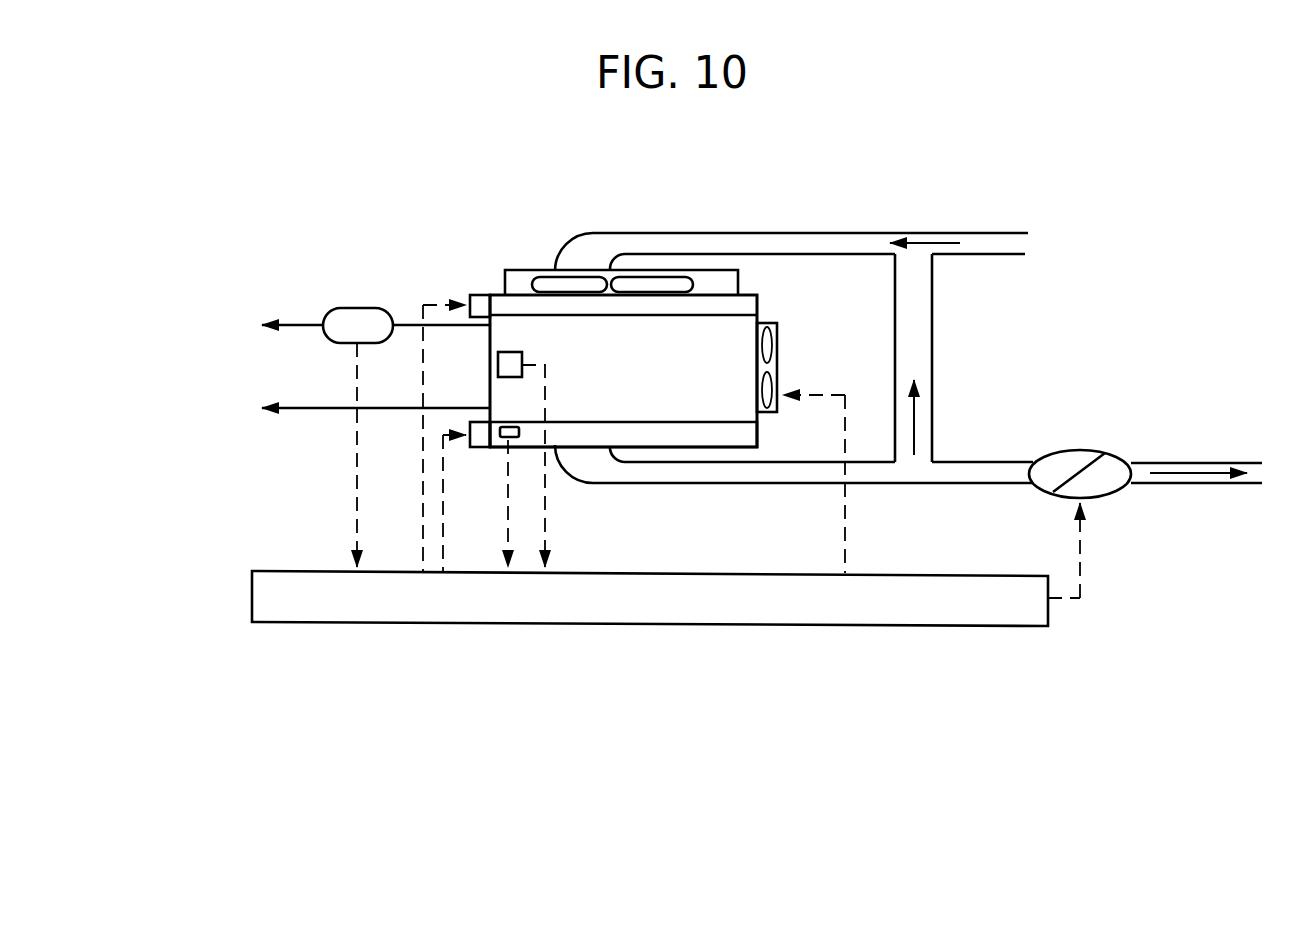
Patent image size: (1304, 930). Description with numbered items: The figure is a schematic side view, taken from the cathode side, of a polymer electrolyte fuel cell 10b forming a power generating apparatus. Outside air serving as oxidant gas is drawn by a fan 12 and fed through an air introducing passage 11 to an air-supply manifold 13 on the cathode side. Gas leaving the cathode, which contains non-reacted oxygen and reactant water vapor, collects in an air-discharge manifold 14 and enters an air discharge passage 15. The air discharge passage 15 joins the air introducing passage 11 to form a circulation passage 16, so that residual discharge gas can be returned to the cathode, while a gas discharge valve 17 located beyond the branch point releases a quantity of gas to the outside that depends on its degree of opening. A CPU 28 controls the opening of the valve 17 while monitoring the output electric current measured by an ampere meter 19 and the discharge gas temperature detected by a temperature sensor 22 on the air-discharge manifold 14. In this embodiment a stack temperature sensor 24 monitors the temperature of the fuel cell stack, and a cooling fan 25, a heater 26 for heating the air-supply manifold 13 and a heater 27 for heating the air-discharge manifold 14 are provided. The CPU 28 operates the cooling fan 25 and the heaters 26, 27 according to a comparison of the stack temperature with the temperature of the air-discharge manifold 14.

The fuel cell 10b is at (496, 262).
The air introducing passage 11 is at (766, 240).
The fan 12 is at (548, 282).
The air-supply manifold 13 is at (757, 300).
The air-discharge manifold 14 is at (750, 434).
The air discharge passage 15 is at (705, 470).
The circulation passage 16 is at (908, 298).
The gas discharge valve 17 is at (1071, 460).
The ampere meter 19 is at (335, 338).
The temperature sensor 22 is at (505, 440).
The stack temperature sensor 24 is at (498, 363).
The cooling fan 25 is at (777, 360).
The heater 26 is at (480, 300).
The heater 27 is at (476, 448).
The CPU 28 is at (920, 584).